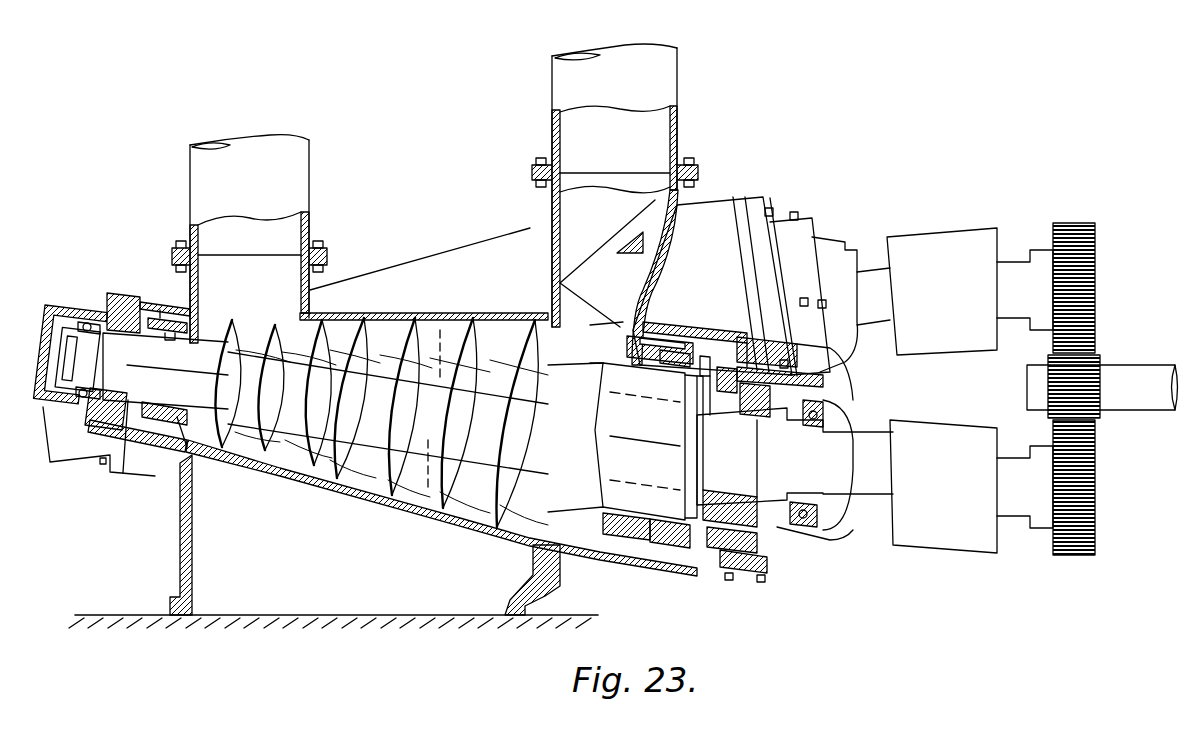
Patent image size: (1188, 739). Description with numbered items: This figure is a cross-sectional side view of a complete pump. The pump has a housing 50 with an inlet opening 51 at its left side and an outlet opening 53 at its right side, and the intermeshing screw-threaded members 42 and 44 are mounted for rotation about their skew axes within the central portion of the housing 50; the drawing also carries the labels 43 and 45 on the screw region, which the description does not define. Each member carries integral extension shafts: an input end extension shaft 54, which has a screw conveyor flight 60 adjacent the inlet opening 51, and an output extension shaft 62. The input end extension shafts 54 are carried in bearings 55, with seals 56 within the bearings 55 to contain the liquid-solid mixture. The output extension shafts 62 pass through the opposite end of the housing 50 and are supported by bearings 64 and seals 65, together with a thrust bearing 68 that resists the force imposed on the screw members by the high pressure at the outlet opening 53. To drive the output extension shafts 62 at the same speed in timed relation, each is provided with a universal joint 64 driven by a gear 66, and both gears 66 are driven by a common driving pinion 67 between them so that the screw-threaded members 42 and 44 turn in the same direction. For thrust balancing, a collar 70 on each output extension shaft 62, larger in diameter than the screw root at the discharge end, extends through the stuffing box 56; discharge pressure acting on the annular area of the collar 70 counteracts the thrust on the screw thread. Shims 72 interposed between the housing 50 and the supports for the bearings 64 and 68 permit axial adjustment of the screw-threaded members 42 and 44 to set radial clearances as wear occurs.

The screw-threaded member 42 is at (401, 326).
The screw shaft hub 43 is at (325, 403).
The screw-threaded member 44 is at (495, 322).
The screw flight 45 is at (452, 326).
The housing 50 is at (352, 312).
The inlet opening 51 is at (272, 150).
The outlet opening 53 is at (572, 53).
The input end extension shaft 54 is at (145, 310).
The bearings 55 is at (96, 325).
The seals 56 is at (170, 430).
The screw conveyor flight 60 is at (274, 330).
The output extension shaft 62 is at (888, 327).
The bearings / universal joint 64 is at (946, 237).
The seals 65 is at (642, 540).
The gear 66 is at (1094, 272).
The driving pinion 67 is at (1100, 376).
The thrust bearing 68 is at (735, 556).
The collar 70 is at (610, 488).
The shims 72 is at (748, 580).